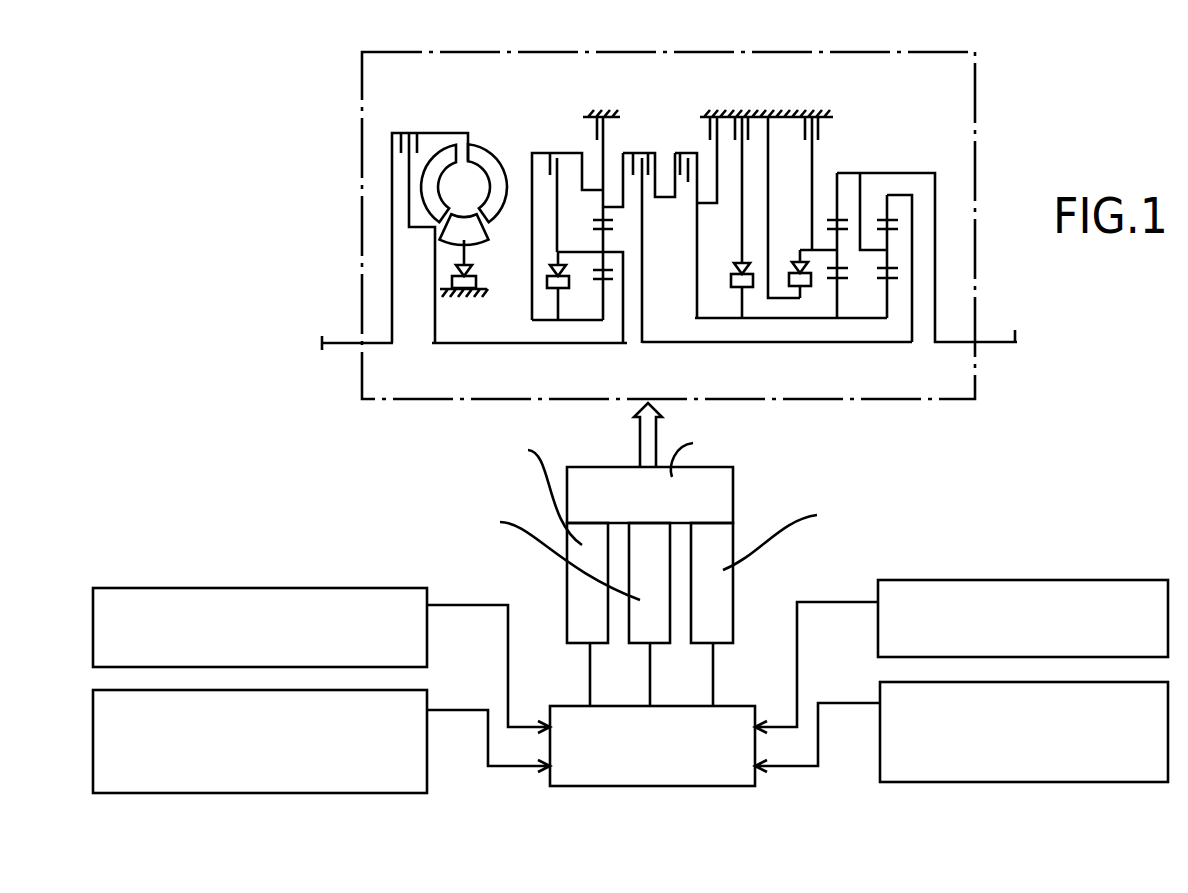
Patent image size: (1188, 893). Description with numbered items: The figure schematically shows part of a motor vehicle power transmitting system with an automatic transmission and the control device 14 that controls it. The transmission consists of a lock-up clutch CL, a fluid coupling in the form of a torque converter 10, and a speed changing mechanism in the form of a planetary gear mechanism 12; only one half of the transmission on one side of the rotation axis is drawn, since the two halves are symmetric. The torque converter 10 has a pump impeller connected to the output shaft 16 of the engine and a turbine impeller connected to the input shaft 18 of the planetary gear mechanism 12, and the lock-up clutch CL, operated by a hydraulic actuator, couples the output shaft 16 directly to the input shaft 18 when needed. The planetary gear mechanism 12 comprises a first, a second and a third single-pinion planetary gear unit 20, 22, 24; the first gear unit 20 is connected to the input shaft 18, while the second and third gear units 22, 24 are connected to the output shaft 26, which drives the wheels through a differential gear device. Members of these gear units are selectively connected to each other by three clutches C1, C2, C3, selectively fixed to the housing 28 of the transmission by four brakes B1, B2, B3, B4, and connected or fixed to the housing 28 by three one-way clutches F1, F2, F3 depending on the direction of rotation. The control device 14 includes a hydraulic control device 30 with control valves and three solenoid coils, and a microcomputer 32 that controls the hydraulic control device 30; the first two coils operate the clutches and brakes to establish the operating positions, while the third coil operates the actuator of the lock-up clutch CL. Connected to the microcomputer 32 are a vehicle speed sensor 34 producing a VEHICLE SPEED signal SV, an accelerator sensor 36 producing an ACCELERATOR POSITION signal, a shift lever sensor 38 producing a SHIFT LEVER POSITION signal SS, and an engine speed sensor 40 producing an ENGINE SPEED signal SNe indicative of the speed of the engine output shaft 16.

The torque converter 10 is at (478, 99).
The planetary gear mechanism 12 is at (890, 84).
The control device 14 is at (653, 716).
The output shaft of the engine 16 is at (322, 350).
The input shaft of the planetary gear mechanism 18 is at (476, 343).
The first planetary gear unit 20 is at (608, 330).
The second planetary gear unit 22 is at (831, 336).
The third planetary gear unit 24 is at (894, 335).
The output shaft of the mechanism 26 is at (997, 342).
The housing 28 is at (603, 110).
The hydraulic control device 30 is at (723, 485).
The microcomputer 32 is at (660, 773).
The vehicle speed sensor 34 is at (392, 588).
The accelerator sensor 36 is at (397, 783).
The shift lever sensor 38 is at (960, 582).
The engine speed sensor 40 is at (1035, 770).
The lock-up clutch CL is at (418, 138).
The clutch C1 is at (548, 162).
The clutch C2 is at (635, 165).
The clutch C3 is at (688, 165).
The brake B1 is at (592, 132).
The brake B2 is at (707, 130).
The brake B3 is at (752, 113).
The brake B4 is at (822, 130).
The one-way clutch F1 is at (565, 278).
The one-way clutch F2 is at (735, 275).
The one-way clutch F3 is at (795, 270).
The VEHICLE SPEED signal SV is at (488, 655).
The SHIFT LEVER POSITION signal SS is at (816, 654).
The ENGINE SPEED signal SNe is at (817, 725).